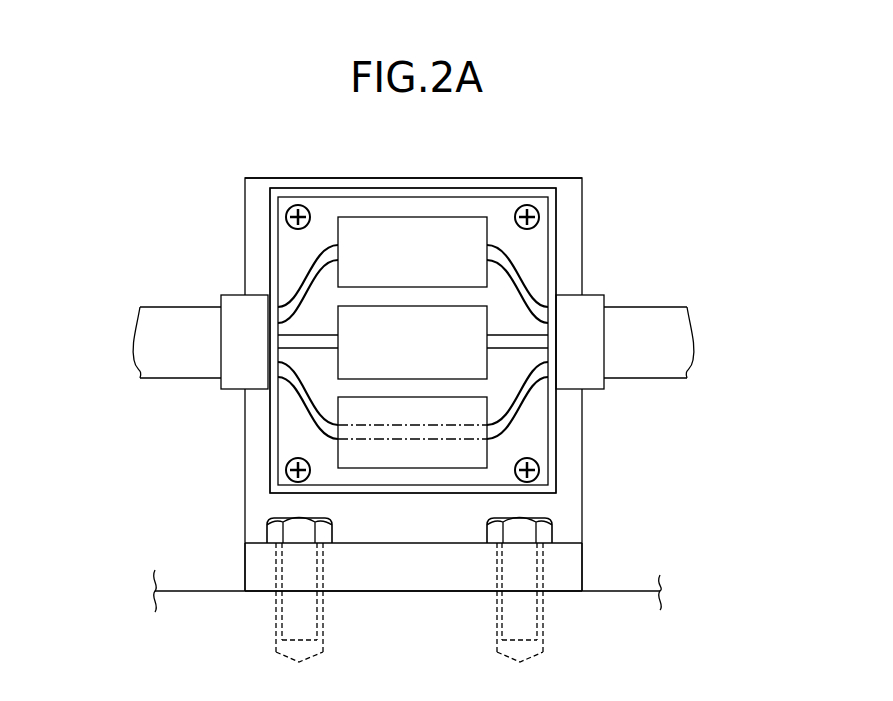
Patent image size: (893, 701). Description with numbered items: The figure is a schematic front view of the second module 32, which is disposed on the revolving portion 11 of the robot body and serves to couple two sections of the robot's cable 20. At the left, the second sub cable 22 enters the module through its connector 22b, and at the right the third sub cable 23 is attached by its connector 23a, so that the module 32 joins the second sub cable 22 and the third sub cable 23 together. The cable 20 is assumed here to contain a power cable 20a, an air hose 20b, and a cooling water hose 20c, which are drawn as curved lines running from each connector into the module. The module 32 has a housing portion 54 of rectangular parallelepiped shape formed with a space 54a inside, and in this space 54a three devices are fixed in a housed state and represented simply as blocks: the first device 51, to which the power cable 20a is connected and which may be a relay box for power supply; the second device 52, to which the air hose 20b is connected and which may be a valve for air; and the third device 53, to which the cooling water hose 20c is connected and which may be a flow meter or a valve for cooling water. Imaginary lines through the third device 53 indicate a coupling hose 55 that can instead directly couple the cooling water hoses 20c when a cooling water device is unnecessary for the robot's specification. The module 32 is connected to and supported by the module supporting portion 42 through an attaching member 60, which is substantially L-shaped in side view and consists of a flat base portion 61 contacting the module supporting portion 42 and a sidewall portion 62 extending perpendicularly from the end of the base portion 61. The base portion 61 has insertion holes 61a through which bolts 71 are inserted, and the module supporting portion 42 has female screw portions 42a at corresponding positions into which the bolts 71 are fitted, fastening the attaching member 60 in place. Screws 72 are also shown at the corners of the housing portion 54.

The revolving portion 11 is at (642, 584).
The module supporting portion 42 is at (612, 591).
The female screw portion 42a is at (276, 637).
The attaching member 60 is at (592, 472).
The base portion 61 is at (565, 583).
The insertion hole 61a is at (276, 568).
The sidewall portion 62 is at (545, 178).
The second module 32 is at (481, 180).
The housing portion 54 is at (376, 182).
The space 54a is at (330, 205).
The first device 51 is at (415, 217).
The second device 52 is at (458, 306).
The third device 53 is at (437, 462).
The coupling hose 55 is at (381, 440).
The cable 20 is at (407, 313).
The second sub cable 22 is at (165, 307).
The connector 22b is at (232, 295).
The third sub cable 23 is at (662, 317).
The connector 23a is at (568, 300).
The power cable 20a is at (303, 268).
The air hose 20b is at (293, 398).
The cooling water hose 20c is at (300, 410).
The bolt 71 is at (270, 528).
The screw 72 is at (298, 205).